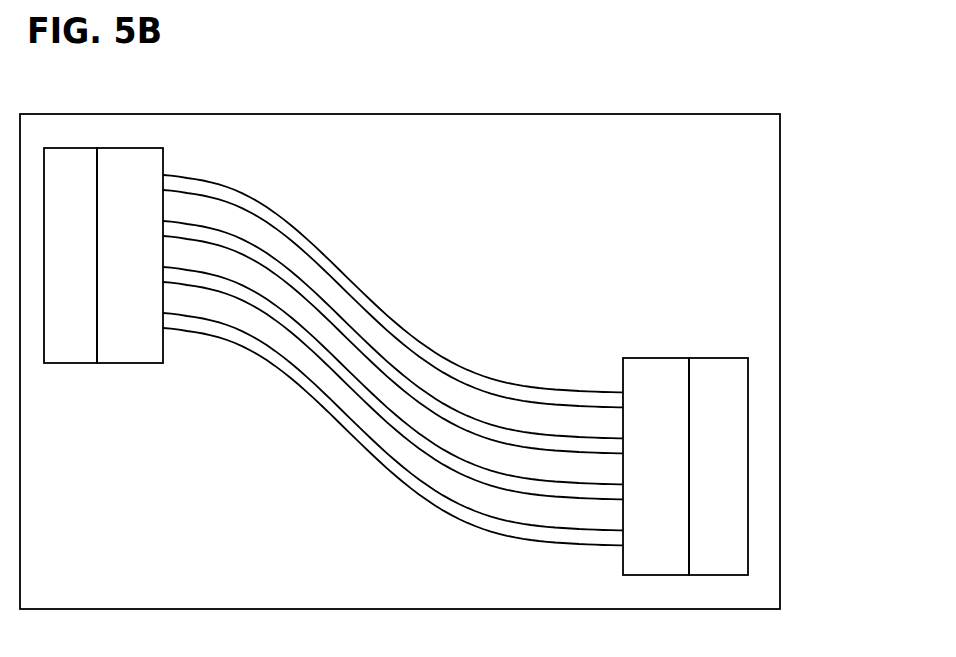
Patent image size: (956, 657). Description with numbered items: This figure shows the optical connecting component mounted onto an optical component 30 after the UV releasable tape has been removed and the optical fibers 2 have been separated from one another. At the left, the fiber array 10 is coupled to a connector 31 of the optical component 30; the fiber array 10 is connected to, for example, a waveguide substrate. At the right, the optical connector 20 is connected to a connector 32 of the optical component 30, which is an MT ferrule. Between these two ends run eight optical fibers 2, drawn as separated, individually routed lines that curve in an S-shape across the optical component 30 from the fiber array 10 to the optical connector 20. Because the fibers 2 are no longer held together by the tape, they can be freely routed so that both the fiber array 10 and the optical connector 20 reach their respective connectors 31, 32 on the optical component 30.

The optical fibers 2 is at (348, 290).
The fiber array 10 is at (130, 160).
The optical connector 20 is at (658, 366).
The optical component 30 is at (440, 148).
The connector 31 is at (78, 160).
The connector (MT ferrule) 32 is at (717, 366).